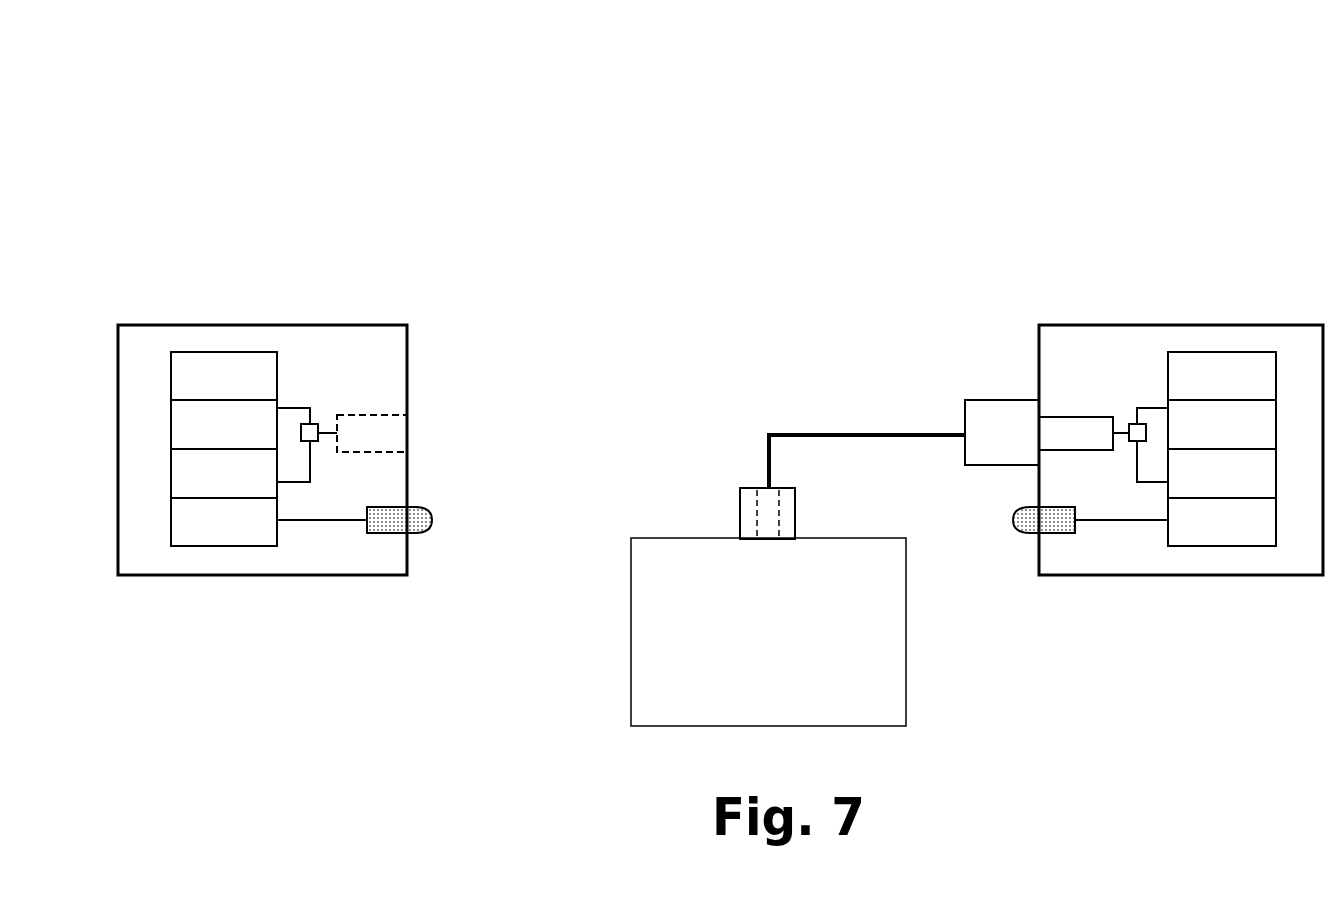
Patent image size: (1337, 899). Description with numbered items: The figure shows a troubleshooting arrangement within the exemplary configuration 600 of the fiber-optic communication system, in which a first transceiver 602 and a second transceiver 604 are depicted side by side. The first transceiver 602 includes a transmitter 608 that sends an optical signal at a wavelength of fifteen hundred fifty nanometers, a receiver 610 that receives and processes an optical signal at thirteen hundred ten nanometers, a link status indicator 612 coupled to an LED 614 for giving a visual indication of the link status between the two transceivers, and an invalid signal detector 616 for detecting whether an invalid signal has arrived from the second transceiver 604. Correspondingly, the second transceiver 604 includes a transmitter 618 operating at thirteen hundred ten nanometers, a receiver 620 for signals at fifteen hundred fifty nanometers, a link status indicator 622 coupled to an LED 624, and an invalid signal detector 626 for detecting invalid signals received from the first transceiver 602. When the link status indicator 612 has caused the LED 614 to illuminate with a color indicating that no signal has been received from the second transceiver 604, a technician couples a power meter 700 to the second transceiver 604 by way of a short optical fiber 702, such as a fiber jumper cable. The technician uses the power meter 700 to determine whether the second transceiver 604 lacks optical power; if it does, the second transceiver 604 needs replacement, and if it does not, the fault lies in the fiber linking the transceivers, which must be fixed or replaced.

The configuration 600 is at (559, 126).
The first transceiver 602 is at (277, 325).
The second transceiver 604 is at (1167, 325).
The transmitter 608 is at (205, 437).
The receiver 610 is at (205, 486).
The link status indicator 612 is at (205, 535).
The LED 614 is at (432, 522).
The invalid signal detector 616 is at (205, 388).
The transmitter 618 is at (1203, 437).
The receiver 620 is at (1203, 486).
The link status indicator 622 is at (1203, 535).
The LED 624 is at (1013, 523).
The invalid signal detector 626 is at (1203, 388).
The power meter 700 is at (748, 644).
The short optical fiber 702 is at (820, 433).